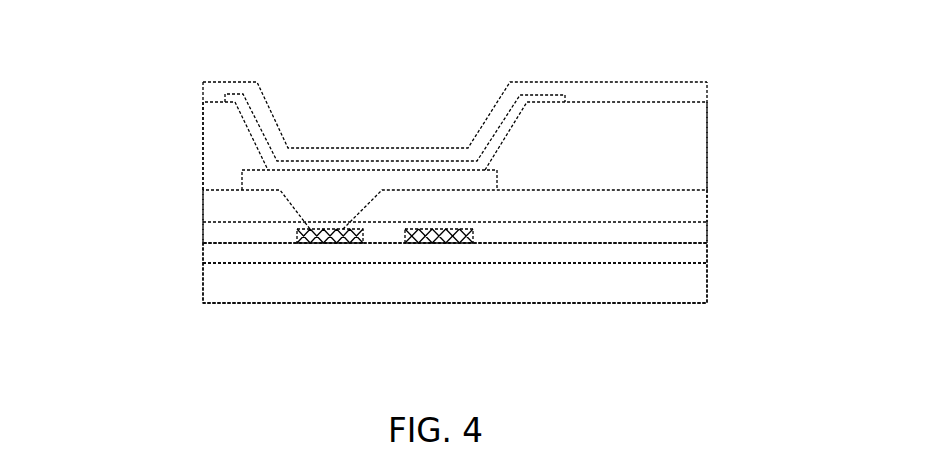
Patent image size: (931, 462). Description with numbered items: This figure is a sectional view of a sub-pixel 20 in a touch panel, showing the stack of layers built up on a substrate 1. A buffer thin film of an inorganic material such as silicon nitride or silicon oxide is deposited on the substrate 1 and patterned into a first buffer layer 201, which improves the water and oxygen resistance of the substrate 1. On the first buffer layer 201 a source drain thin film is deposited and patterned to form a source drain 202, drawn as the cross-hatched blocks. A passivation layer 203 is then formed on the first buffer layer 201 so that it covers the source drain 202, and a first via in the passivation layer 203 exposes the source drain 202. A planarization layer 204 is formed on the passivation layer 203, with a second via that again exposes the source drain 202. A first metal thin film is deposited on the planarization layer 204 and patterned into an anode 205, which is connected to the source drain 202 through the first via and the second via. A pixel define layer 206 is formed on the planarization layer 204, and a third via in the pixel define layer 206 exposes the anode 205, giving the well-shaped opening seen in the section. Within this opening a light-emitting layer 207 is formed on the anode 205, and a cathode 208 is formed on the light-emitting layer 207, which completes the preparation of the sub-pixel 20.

The sub-pixel 20 is at (710, 145).
The substrate 1 is at (202, 285).
The first buffer layer 201 is at (202, 258).
The source drain 202 is at (336, 244).
The passivation layer 203 is at (202, 233).
The planarization layer 204 is at (202, 205).
The anode 205 is at (250, 168).
The pixel define layer 206 is at (608, 125).
The light-emitting layer 207 is at (250, 110).
The cathode 208 is at (348, 148).